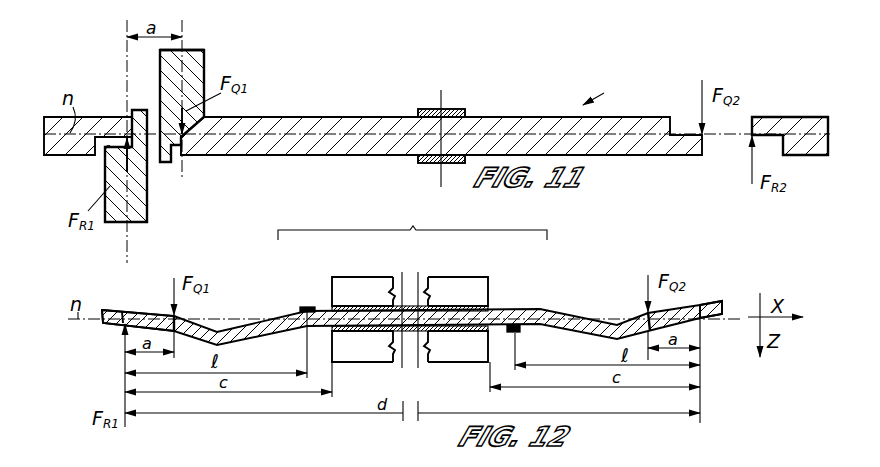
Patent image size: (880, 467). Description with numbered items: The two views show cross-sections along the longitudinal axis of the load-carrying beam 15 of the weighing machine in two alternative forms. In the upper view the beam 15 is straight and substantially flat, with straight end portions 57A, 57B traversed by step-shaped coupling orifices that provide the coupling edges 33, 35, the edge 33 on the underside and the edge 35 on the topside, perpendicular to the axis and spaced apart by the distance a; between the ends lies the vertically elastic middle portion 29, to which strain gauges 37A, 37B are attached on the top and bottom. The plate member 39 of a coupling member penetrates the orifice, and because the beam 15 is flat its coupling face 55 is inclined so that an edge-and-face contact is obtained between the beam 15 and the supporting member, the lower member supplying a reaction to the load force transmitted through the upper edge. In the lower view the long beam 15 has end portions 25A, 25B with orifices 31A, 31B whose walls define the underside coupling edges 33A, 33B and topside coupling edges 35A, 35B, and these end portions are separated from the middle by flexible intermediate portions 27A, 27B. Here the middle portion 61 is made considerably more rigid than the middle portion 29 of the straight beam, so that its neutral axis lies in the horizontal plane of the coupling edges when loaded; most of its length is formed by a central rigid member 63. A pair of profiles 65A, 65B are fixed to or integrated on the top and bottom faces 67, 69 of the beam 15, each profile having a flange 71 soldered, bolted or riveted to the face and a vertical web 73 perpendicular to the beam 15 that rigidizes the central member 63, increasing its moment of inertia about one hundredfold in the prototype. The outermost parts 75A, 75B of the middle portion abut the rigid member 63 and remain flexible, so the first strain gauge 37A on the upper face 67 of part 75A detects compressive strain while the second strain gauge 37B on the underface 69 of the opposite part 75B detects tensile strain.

In FIG. 11, the beam 15 is at (617, 144).
In FIG. 12, the beam 15 is at (279, 330).
In FIG. 11, the middle portion 29 is at (608, 97).
In FIG. 11, the orifice 31A is at (153, 153).
In FIG. 12, the orifice 31A is at (137, 309).
In FIG. 11, the orifice 31B is at (722, 146).
In FIG. 12, the orifice 31B is at (708, 304).
In FIG. 11, the coupling edge 33 is at (126, 130).
In FIG. 12, the coupling edge 33A is at (121, 324).
In FIG. 12, the coupling edge 33B is at (703, 328).
In FIG. 11, the coupling edge 35 is at (197, 156).
In FIG. 12, the coupling edge 35A is at (178, 318).
In FIG. 12, the coupling edge 35B is at (652, 318).
In FIG. 11, the strain gauge 37A is at (419, 110).
In FIG. 12, the strain gauge 37A is at (302, 308).
In FIG. 11, the strain gauge 37B is at (419, 163).
In FIG. 12, the strain gauge 37B is at (520, 331).
In FIG. 11, the plate member 39 is at (148, 218).
In FIG. 11, the coupling face 55 is at (110, 145).
In FIG. 11, the straight end portion 57A is at (246, 103).
In FIG. 11, the straight end portion 57B is at (766, 111).
In FIG. 12, the end portion 25A is at (153, 278).
In FIG. 12, the end portion 25B is at (710, 321).
In FIG. 12, the intermediate portion 27A is at (248, 263).
In FIG. 12, the intermediate portion 27B is at (594, 316).
In FIG. 12, the middle portion 61 is at (412, 221).
In FIG. 12, the central rigid member 63 is at (443, 267).
In FIG. 12, the profile 65A is at (367, 292).
In FIG. 12, the profile 65B is at (412, 358).
In FIG. 12, the top face 67 is at (545, 305).
In FIG. 12, the bottom face 69 is at (611, 337).
In FIG. 12, the flange 71 is at (492, 307).
In FIG. 12, the vertical web 73 is at (487, 288).
In FIG. 12, the flexible part 75A is at (321, 309).
In FIG. 12, the flexible part 75B is at (522, 307).